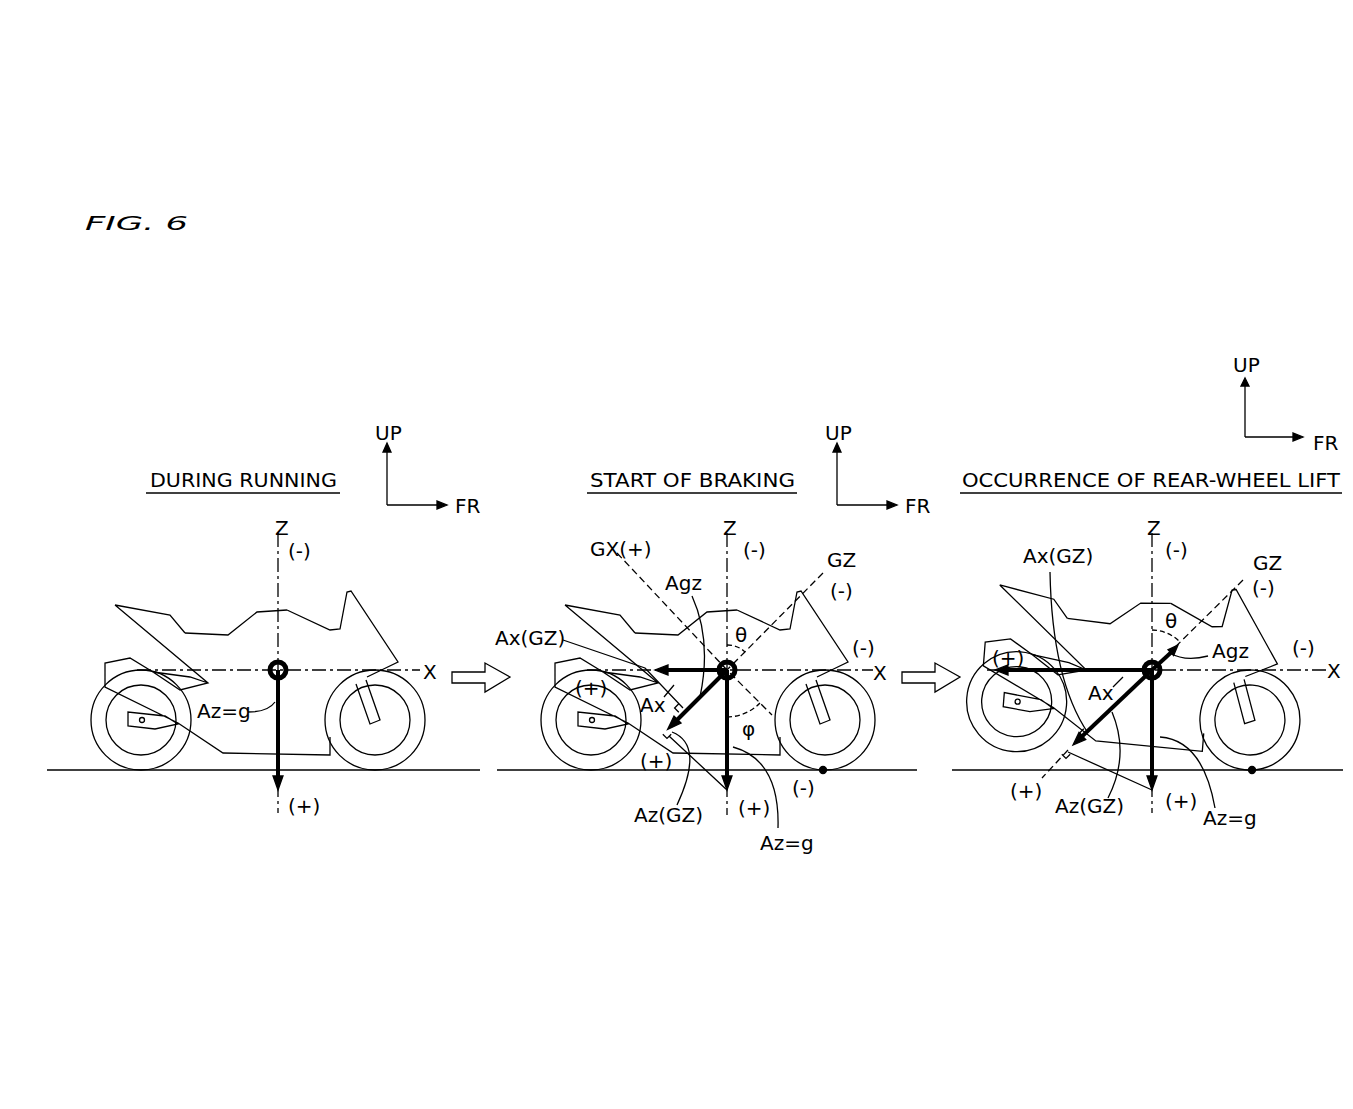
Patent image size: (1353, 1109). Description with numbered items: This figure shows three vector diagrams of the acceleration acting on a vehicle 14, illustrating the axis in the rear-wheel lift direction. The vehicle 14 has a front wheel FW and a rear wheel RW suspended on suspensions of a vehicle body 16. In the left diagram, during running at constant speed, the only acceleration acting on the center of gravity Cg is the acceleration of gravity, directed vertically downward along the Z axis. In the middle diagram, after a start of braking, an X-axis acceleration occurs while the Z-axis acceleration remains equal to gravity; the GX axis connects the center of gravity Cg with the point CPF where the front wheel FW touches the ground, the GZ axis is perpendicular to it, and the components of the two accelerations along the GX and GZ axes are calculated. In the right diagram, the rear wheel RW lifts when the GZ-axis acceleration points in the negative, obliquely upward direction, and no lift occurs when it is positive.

The vehicle 14 is at (376, 613).
The vehicle body 16 is at (253, 617).
The rear wheel RW is at (93, 727).
The front wheel FW is at (412, 743).
The center of gravity Cg is at (266, 663).
The front wheel ground contact point CPF is at (826, 775).